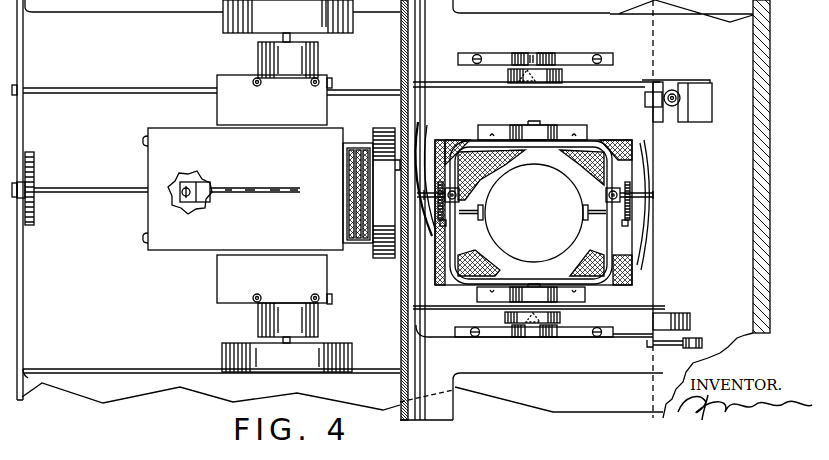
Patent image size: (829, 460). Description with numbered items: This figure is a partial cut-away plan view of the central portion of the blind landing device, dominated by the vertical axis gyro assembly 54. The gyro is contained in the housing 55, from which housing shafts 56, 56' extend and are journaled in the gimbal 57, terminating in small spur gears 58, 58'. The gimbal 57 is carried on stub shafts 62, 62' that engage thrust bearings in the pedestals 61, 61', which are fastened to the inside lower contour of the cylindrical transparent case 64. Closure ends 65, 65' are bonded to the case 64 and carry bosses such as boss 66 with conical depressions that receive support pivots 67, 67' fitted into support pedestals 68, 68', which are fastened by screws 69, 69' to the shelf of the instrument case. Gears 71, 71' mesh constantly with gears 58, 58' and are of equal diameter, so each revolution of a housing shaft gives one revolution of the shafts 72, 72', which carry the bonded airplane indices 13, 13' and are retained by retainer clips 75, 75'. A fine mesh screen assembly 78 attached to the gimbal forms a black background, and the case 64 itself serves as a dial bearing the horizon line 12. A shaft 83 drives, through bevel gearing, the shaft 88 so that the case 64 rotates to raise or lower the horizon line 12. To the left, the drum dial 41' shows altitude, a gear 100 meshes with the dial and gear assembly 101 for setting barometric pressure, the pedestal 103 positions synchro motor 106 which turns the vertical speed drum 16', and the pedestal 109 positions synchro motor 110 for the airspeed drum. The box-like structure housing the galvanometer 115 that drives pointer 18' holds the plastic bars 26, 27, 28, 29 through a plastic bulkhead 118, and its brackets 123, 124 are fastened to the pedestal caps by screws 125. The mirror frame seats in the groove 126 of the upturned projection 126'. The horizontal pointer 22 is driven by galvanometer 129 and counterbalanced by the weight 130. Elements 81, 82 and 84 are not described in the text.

The horizon line 12 is at (416, 124).
The airplane index 13 is at (434, 174).
The airplane index 13' is at (660, 205).
The vertical speed drum 16' is at (291, 349).
The pointer 18' is at (255, 179).
The horizontal pointer 22 is at (468, 338).
The plastic bar 26 is at (360, 242).
The plastic bar 27 is at (362, 155).
The plastic bar 28 is at (352, 240).
The plastic bar 29 is at (352, 148).
The drum dial 41' is at (386, 207).
The vertical axis gyro assembly 54 is at (598, 83).
The housing 55 is at (560, 186).
The housing shaft 56 is at (470, 207).
The housing shaft 56' is at (594, 205).
The gimbal 57 is at (595, 146).
The spur gear 58 is at (456, 232).
The spur gear 58' is at (608, 234).
The pedestal 61 is at (544, 296).
The pedestal 61' is at (532, 123).
The stub shaft 62 is at (535, 283).
The stub shaft 62' is at (532, 123).
The cylindrical transparent case 64 is at (650, 298).
The closure end 65 is at (539, 316).
The closure end 65' is at (506, 77).
The boss 66 is at (560, 318).
The support pivot 67 is at (516, 342).
The support pivot 67' is at (544, 47).
The support pedestal 68 is at (548, 342).
The support pedestal 68' is at (519, 47).
The screw 69 is at (536, 344).
The screw 69' is at (543, 46).
The gear 71 is at (431, 186).
The gear 71' is at (632, 175).
The shaft 72 is at (431, 201).
The shaft 72' is at (627, 214).
The retainer clip 75 is at (459, 187).
The retainer clip 75' is at (618, 185).
The fine mesh screen assembly 78 is at (636, 276).
The block 81 is at (645, 98).
The bracket 82 is at (668, 108).
The shaft 83 is at (672, 90).
The stop block 84 is at (700, 103).
The shaft 88 is at (104, 88).
The gear 100 is at (33, 220).
The dial and gear assembly 101 is at (35, 175).
The pedestal 103 is at (333, 300).
The synchro motor 106 is at (258, 317).
The pedestal 109 is at (328, 80).
The synchro motor 110 is at (258, 58).
The galvanometer 115 is at (205, 172).
The plastic bulkhead 118 is at (345, 152).
The bracket 123 is at (217, 108).
The bracket 124 is at (217, 277).
The screw 125 is at (312, 85).
The groove 126 is at (388, 210).
The upturned projection 126' is at (435, 210).
The galvanometer 129 is at (686, 314).
The weight 130 is at (690, 340).